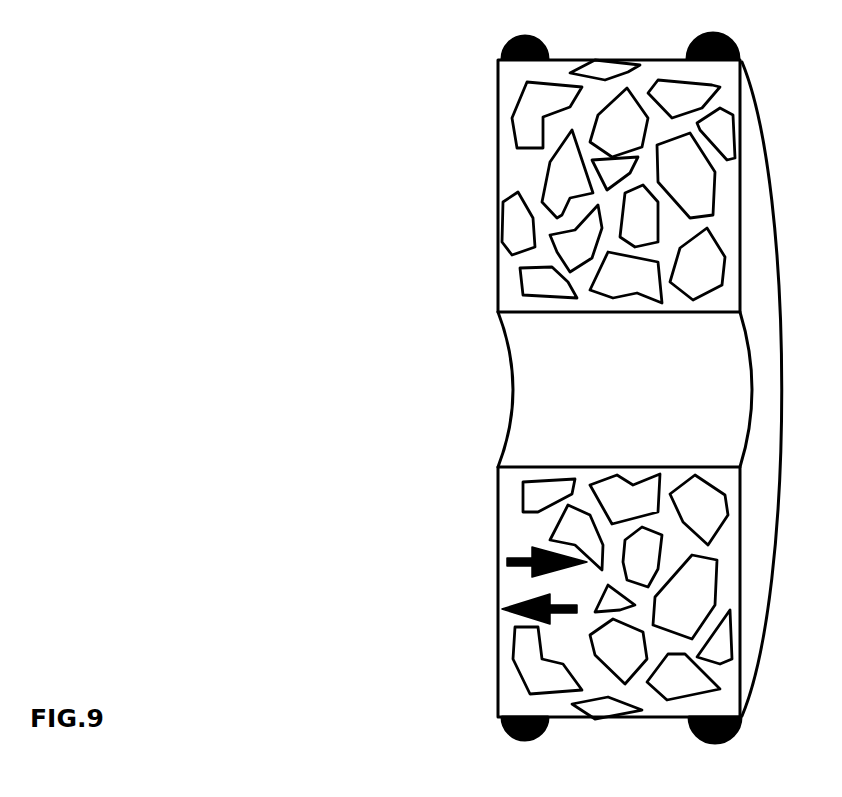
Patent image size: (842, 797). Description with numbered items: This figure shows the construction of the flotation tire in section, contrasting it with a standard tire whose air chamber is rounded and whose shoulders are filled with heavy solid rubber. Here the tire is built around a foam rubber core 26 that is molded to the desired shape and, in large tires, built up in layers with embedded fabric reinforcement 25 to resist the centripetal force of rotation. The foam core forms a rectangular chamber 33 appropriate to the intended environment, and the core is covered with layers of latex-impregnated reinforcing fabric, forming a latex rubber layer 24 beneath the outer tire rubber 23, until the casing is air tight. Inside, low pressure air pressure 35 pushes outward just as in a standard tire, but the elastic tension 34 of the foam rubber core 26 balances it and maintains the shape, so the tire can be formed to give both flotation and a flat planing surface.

The tire rubber 23 is at (483, 52).
The latex rubber layer 24 is at (498, 127).
The fabric reinforcement 25 is at (498, 190).
The foam rubber core 26 is at (585, 248).
The rectangular chamber 33 is at (492, 505).
The elastic tension 34 is at (492, 570).
The air pressure 35 is at (492, 607).